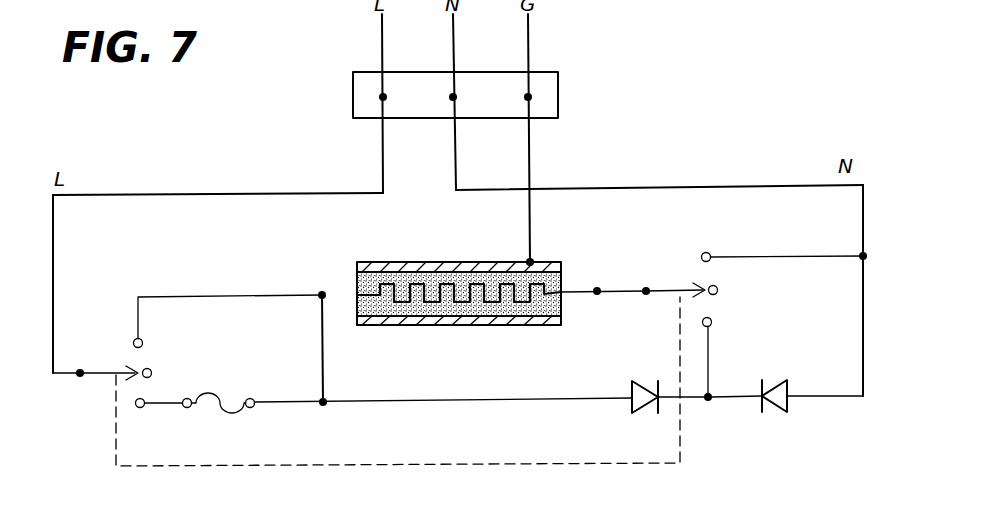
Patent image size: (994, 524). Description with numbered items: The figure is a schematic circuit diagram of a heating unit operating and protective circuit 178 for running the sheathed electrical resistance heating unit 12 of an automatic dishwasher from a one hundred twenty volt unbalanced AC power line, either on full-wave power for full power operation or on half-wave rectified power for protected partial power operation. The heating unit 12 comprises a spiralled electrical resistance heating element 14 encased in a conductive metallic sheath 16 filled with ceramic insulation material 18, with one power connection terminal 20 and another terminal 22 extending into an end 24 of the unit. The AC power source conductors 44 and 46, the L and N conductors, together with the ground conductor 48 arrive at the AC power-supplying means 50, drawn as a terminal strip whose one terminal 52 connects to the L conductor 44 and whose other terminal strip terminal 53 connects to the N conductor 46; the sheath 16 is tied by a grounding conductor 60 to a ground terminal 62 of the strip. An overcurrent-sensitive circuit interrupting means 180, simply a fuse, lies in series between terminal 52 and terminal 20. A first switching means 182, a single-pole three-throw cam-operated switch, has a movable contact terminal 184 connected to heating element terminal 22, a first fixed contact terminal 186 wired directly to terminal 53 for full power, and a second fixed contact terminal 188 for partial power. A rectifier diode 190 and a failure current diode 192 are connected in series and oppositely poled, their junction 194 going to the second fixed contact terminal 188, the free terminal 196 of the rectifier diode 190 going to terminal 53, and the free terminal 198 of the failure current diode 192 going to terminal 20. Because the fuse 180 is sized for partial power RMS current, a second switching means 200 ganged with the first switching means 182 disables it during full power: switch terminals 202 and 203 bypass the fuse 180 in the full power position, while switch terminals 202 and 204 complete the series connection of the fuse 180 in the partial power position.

The sheathed electrical resistance heating unit 12 is at (459, 296).
The electrical resistance heating element 14 is at (482, 275).
The conductive metallic sheath 16 is at (522, 325).
The ceramic insulation material 18 is at (428, 275).
The power connection terminal 20 is at (320, 288).
The power connection terminal 22 is at (598, 288).
The end of heating unit 24 is at (378, 262).
The AC power source conductor 44 is at (383, 38).
The AC power source conductor 46 is at (454, 52).
The ground conductor 48 is at (529, 44).
The AC power-supplying means 50 is at (558, 105).
The terminal 52 is at (380, 97).
The terminal strip terminal 53 is at (450, 96).
The grounding conductor 60 is at (533, 240).
The ground terminal 62 is at (530, 95).
The heating unit operating and protective circuit 178 is at (196, 486).
The overcurrent-sensitive circuit interrupting means 180 is at (222, 395).
The first switching means 182 is at (760, 273).
The movable contact terminal 184 is at (645, 294).
The first fixed contact terminal 186 is at (700, 257).
The second fixed contact terminal 188 is at (703, 325).
The rectifier diode 190 is at (788, 382).
The failure current diode 192 is at (636, 384).
The junction 194 is at (712, 400).
The free terminal of rectifier diode 196 is at (843, 396).
The free terminal of failure current diode 198 is at (440, 400).
The second switching means 200 is at (180, 359).
The switch terminal 202 is at (78, 377).
The switch terminal 203 is at (140, 338).
The switch terminal 204 is at (138, 408).